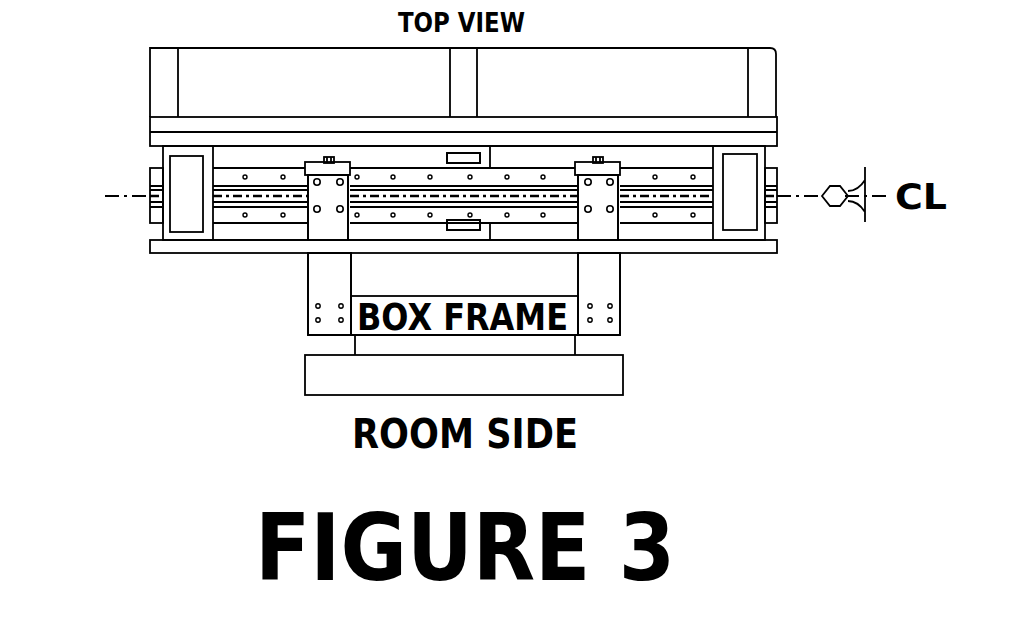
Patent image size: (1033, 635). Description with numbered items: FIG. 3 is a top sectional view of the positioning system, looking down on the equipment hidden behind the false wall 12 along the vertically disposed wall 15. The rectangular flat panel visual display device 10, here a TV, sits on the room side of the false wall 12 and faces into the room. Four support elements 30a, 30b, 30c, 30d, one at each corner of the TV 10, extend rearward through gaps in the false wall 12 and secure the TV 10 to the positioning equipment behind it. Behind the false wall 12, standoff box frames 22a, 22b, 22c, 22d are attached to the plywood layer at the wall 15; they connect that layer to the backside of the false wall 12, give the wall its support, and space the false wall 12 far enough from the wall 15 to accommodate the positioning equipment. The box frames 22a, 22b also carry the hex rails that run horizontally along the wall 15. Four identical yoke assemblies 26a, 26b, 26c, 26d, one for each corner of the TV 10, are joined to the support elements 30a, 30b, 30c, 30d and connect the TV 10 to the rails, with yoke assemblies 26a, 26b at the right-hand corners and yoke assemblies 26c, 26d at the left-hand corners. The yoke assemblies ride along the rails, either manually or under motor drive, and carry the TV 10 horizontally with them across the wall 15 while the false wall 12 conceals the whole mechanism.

The flat panel visual display device 10 is at (303, 373).
The false wall 12 is at (153, 247).
The wall 15 is at (779, 52).
The standoff box frame 22a is at (437, 228).
The standoff box frame 22b is at (493, 227).
The standoff box frame 22c is at (765, 155).
The left end guide block 22d is at (163, 160).
The yoke assembly 26a is at (612, 160).
The yoke assembly 26b is at (659, 150).
The yoke assembly 26c is at (317, 160).
The yoke assembly 26d is at (308, 150).
The support element 30a is at (613, 272).
The support element 30b is at (697, 294).
The support element 30c is at (317, 272).
The support element 30d is at (273, 294).